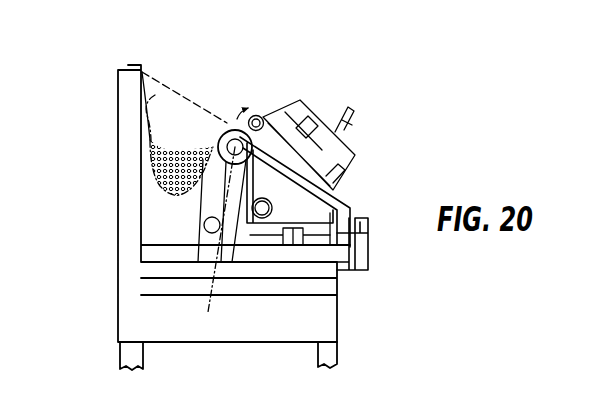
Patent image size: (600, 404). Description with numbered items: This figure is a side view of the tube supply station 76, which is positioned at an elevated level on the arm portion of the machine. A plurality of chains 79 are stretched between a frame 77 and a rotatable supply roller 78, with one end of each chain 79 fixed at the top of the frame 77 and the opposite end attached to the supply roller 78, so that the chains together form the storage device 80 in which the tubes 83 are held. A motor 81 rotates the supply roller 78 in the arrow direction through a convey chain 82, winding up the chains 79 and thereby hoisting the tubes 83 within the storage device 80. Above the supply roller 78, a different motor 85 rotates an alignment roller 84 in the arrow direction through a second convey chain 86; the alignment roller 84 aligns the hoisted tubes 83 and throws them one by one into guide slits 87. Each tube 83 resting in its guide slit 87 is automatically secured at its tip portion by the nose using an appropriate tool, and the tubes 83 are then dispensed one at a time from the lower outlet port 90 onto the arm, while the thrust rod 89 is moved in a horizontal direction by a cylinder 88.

The tube supply station 76 is at (306, 94).
The frame 77 is at (118, 195).
The supply roller 78 is at (250, 112).
The chain 79 is at (155, 95).
The storage device 80 is at (188, 122).
The motor 81 is at (205, 262).
The convey chain 82 is at (218, 242).
The tube 83 is at (180, 193).
The alignment roller 84 is at (263, 118).
The motor 85 is at (340, 200).
The convey chain 86 is at (340, 187).
The guide slit 87 is at (350, 133).
The cylinder 88 is at (266, 237).
The thrust rod 89 is at (308, 237).
The lower outlet port 90 is at (355, 271).